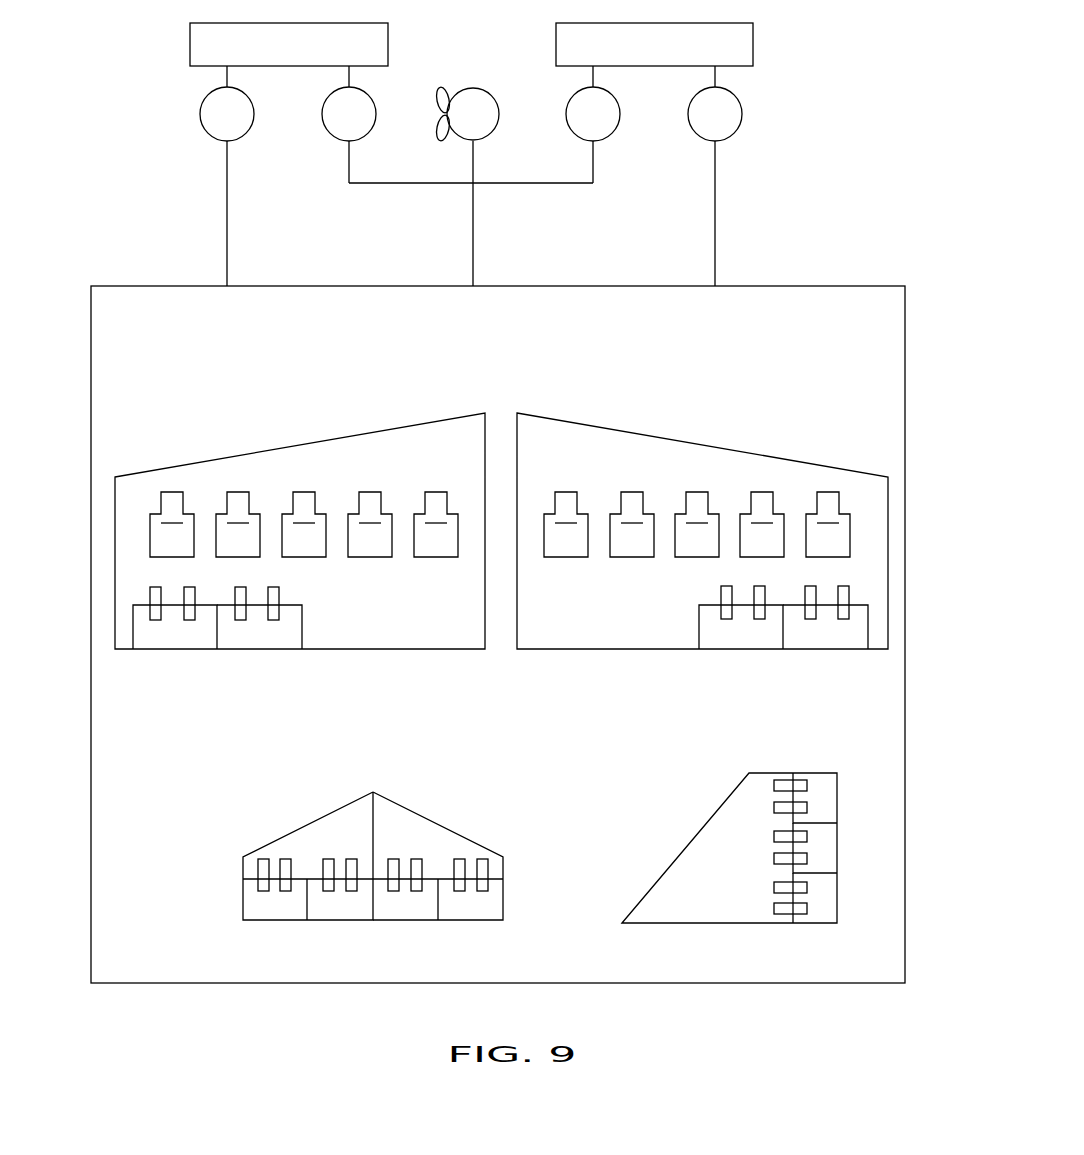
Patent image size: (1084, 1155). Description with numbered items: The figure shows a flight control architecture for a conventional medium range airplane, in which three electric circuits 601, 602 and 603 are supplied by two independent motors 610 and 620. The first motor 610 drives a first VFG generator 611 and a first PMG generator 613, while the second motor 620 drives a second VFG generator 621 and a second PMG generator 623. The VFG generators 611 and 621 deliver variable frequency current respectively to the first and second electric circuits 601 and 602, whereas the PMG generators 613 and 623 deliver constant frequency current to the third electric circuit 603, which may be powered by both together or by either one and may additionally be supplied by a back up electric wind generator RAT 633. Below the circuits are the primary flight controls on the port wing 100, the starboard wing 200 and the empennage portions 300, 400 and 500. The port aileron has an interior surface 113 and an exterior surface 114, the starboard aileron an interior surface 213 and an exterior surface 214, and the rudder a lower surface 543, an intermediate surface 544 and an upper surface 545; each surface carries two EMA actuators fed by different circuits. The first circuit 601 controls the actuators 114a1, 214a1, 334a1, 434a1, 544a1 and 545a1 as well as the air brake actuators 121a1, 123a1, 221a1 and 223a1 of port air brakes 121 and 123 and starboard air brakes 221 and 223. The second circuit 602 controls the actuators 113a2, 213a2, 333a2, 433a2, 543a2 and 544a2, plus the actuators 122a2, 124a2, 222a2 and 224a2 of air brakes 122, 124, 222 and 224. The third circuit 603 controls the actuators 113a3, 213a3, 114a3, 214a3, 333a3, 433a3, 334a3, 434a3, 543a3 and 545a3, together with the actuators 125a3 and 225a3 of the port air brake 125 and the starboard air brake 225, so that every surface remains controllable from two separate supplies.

The port wing 100 is at (388, 428).
The starboard wing 200 is at (650, 435).
The port elevator part of empennage 300 is at (283, 838).
The starboard elevator part of empennage 400 is at (458, 838).
The rudder part of empennage 500 is at (668, 865).
The interior surface of port aileron 113 is at (250, 622).
The actuator 113a2 is at (242, 620).
The actuator 113a3 is at (277, 610).
The exterior surface of port aileron 114 is at (168, 622).
The actuator 114a1 is at (153, 620).
The actuator 114a3 is at (190, 620).
The port air brake 121 is at (438, 560).
The actuator 121a1 is at (436, 497).
The port air brake 122 is at (370, 560).
The actuator 122a2 is at (370, 497).
The port air brake 123 is at (305, 560).
The actuator 123a1 is at (304, 497).
The port air brake 124 is at (255, 532).
The actuator 124a2 is at (238, 497).
The port air brake 125 is at (158, 540).
The actuator 125a3 is at (172, 497).
The interior surface of starboard aileron 213 is at (750, 622).
The actuator 213a2 is at (758, 620).
The actuator 213a3 is at (725, 612).
The exterior surface of starboard aileron 214 is at (832, 622).
The actuator 214a1 is at (843, 620).
The actuator 214a3 is at (808, 620).
The starboard air brake 221 is at (567, 550).
The actuator 221a1 is at (566, 498).
The starboard air brake 222 is at (632, 550).
The actuator 222a2 is at (632, 498).
The starboard air brake 223 is at (693, 550).
The actuator 223a1 is at (697, 498).
The starboard air brake 224 is at (747, 532).
The actuator 224a2 is at (762, 498).
The starboard air brake 225 is at (843, 540).
The actuator 225a3 is at (828, 498).
The actuator 333a2 is at (325, 891).
The actuator 333a3 is at (350, 891).
The actuator 334a1 is at (243, 881).
The actuator 334a3 is at (285, 891).
The actuator 433a2 is at (418, 891).
The actuator 433a3 is at (393, 891).
The actuator 434a1 is at (503, 881).
The actuator 434a3 is at (460, 891).
The lower rudder surface 543 is at (822, 913).
The actuator 543a2 is at (783, 908).
The actuator 543a3 is at (783, 887).
The intermediate rudder surface 544 is at (833, 855).
The actuator 544a1 is at (800, 836).
The actuator 544a2 is at (783, 858).
The upper rudder surface 545 is at (818, 782).
The actuator 545a1 is at (800, 808).
The actuator 545a3 is at (785, 786).
The first electric circuit 601 is at (243, 264).
The second electric circuit 602 is at (733, 264).
The third electric circuit 603 is at (488, 264).
The first motor 610 is at (372, 44).
The first VFG generator 611 is at (215, 125).
The first PMG generator 613 is at (337, 115).
The second motor 620 is at (738, 44).
The second VFG generator 621 is at (727, 115).
The second PMG generator 623 is at (605, 115).
The back up electric wind generator RAT 633 is at (472, 106).